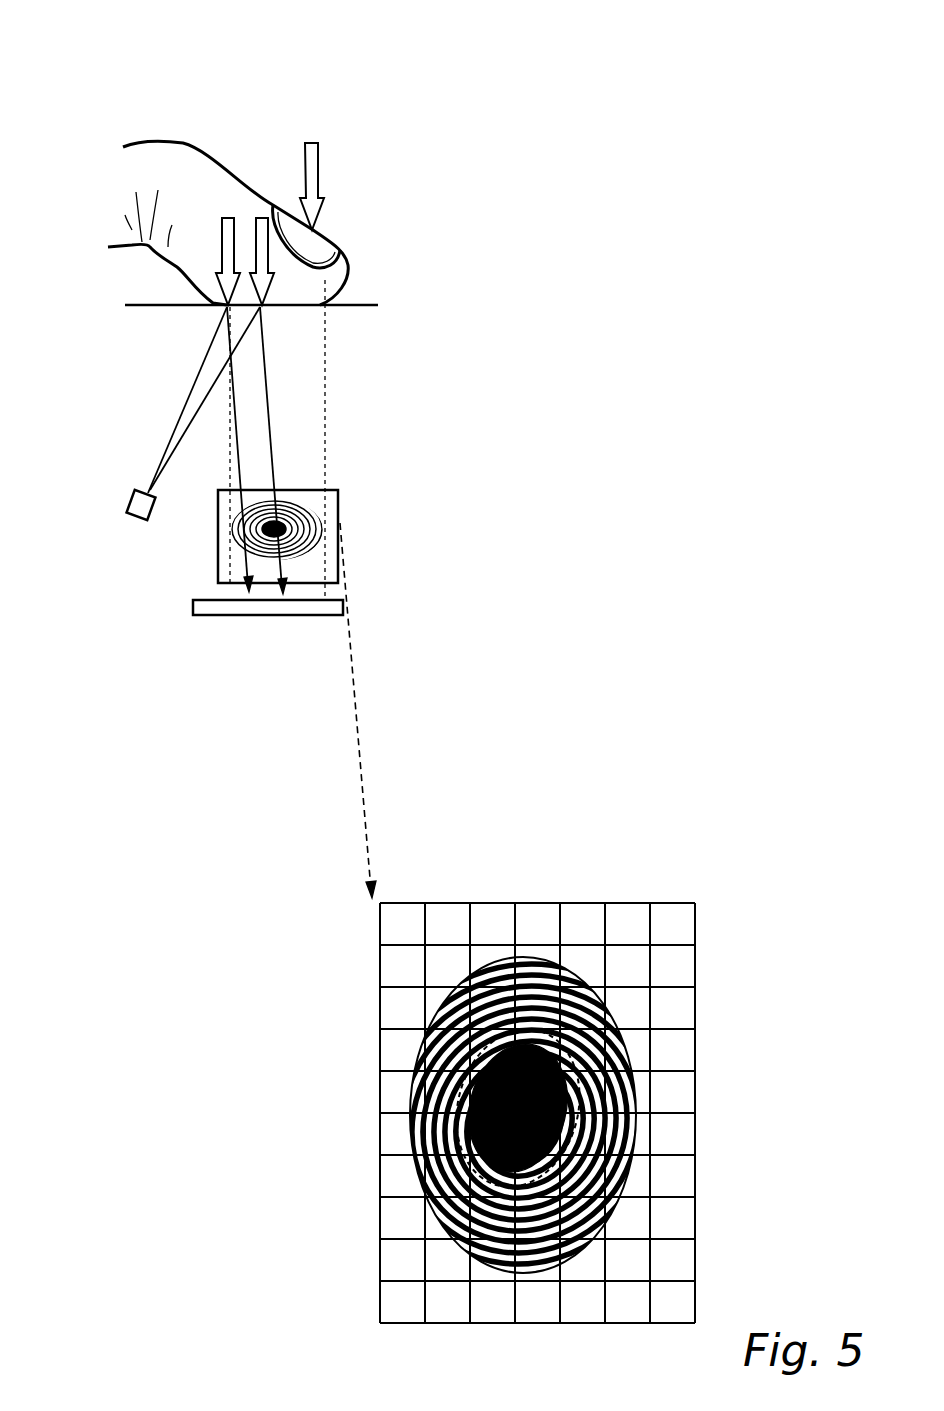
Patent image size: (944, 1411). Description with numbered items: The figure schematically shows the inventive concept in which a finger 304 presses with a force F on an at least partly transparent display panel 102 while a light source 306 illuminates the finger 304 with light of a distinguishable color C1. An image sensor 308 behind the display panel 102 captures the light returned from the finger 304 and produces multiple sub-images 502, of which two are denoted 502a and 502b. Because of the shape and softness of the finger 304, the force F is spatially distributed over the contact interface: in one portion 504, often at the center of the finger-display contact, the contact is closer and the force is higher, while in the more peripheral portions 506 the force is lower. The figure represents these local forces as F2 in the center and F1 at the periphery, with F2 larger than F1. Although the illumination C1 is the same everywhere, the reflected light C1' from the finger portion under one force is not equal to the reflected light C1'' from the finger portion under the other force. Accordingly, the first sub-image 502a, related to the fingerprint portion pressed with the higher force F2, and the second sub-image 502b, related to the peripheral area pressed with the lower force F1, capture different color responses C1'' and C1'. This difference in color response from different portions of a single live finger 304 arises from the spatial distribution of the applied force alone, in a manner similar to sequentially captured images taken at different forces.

The finger 304 is at (152, 157).
The display panel 102 is at (125, 306).
The light source 306 is at (127, 502).
The image sensor 308 is at (263, 617).
The light of distinguishable color C1 is at (159, 400).
The reflected light C1' is at (299, 449).
The reflected light C1'' is at (326, 450).
The force F is at (320, 186).
The force F1 is at (234, 217).
The force F2 is at (260, 217).
The sub-images 502 is at (575, 953).
The first sub-image 502a is at (630, 1120).
The second sub-image 502b is at (603, 1008).
The center portion 504 is at (467, 1115).
The peripheral portions 506 is at (487, 957).